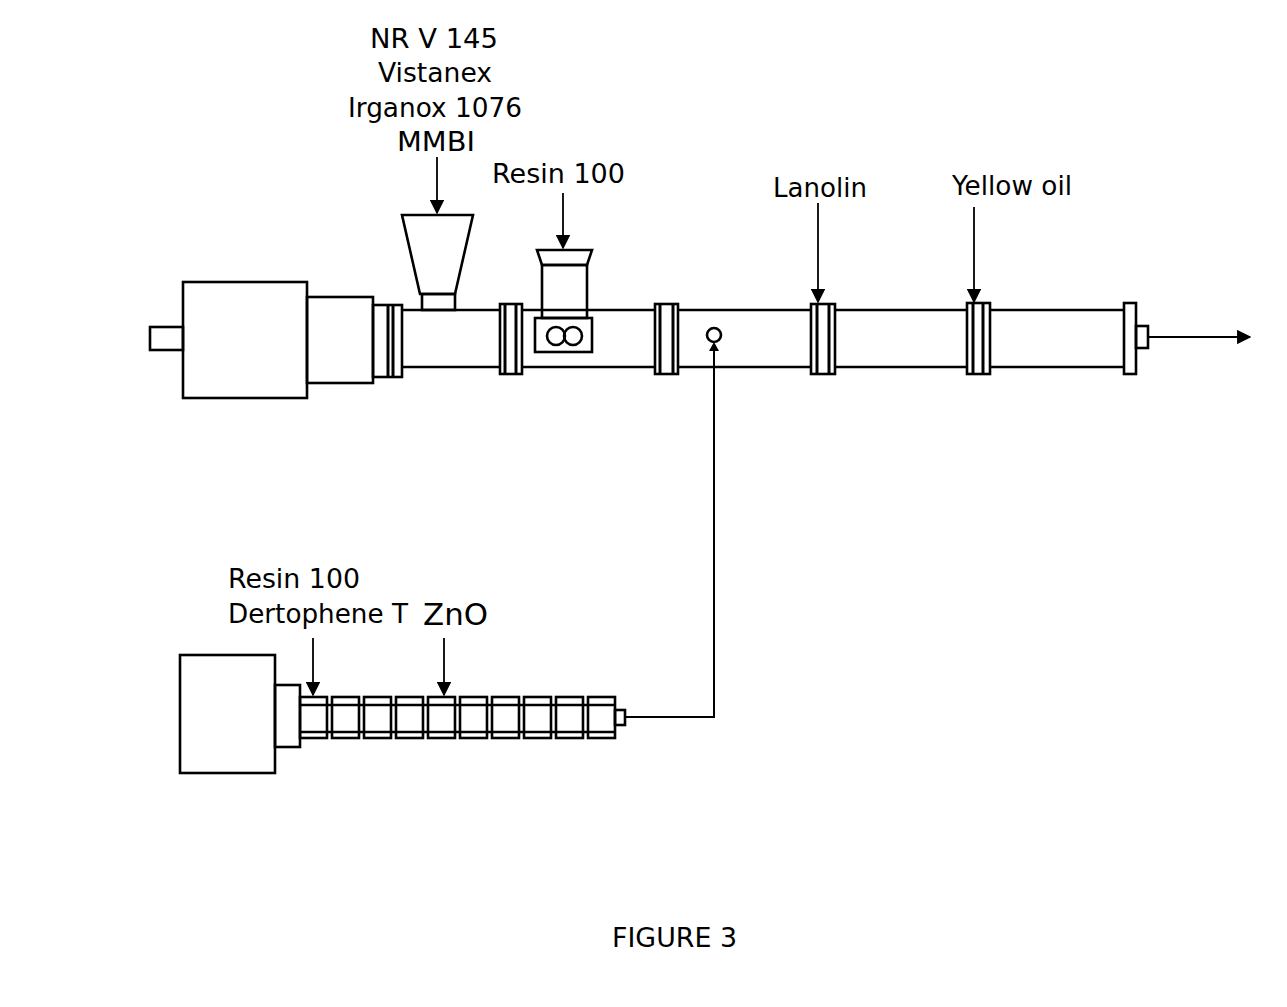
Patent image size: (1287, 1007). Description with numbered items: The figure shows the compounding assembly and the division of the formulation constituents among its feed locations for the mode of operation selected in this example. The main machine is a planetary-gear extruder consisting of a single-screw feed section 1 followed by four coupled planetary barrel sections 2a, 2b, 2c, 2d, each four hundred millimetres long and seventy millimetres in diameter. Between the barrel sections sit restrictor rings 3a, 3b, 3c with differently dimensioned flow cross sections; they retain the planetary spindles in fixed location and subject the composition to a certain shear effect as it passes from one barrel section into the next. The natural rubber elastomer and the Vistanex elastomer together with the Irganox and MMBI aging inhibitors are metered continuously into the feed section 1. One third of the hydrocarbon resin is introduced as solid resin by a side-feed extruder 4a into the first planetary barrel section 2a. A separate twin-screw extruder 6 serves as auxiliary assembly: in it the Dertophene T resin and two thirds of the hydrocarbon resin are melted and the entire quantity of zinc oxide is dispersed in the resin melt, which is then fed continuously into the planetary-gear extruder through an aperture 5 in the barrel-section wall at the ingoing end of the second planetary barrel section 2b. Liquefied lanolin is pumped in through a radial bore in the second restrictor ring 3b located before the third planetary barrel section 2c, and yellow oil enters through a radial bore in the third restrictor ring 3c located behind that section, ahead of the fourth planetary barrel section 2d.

The single-screw feed section 1 is at (438, 353).
The first planetary barrel section 2a is at (610, 353).
The second planetary barrel section 2b is at (788, 353).
The third planetary barrel section 2c is at (942, 350).
The fourth planetary barrel section 2d is at (1057, 347).
The first restrictor ring 3a is at (660, 374).
The second restrictor ring 3b is at (817, 374).
The third restrictor ring 3c is at (983, 374).
The side-feed extruder 4a is at (580, 288).
The aperture 5 is at (713, 327).
The twin-screw extruder 6 is at (237, 763).